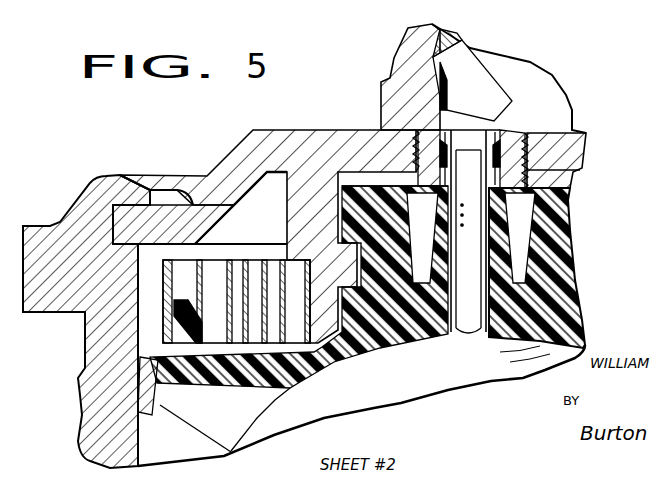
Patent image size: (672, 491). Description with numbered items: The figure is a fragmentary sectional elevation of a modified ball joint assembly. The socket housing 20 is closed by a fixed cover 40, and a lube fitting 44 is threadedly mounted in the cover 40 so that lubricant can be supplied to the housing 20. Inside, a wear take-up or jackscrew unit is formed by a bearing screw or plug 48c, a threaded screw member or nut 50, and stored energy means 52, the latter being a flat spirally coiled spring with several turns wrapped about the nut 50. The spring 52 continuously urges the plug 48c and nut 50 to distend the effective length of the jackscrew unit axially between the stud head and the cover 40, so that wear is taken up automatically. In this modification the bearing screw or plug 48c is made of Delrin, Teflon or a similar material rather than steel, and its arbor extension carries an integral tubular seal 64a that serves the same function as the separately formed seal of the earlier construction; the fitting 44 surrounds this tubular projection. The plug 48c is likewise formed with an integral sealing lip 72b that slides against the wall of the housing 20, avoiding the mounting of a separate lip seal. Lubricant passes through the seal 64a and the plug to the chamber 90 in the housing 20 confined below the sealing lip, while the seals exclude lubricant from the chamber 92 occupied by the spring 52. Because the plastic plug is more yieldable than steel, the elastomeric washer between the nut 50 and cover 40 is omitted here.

The socket housing 20 is at (94, 332).
The cover 40 is at (572, 155).
The lube fitting 44 is at (412, 55).
The bearing screw or plug 48c is at (556, 298).
The nut 50 is at (324, 190).
The stored energy means 52 is at (247, 262).
The integral tubular seal 64a is at (505, 212).
The integral sealing lip 72b is at (140, 398).
The chamber 90 is at (228, 448).
The chamber 92 is at (245, 213).